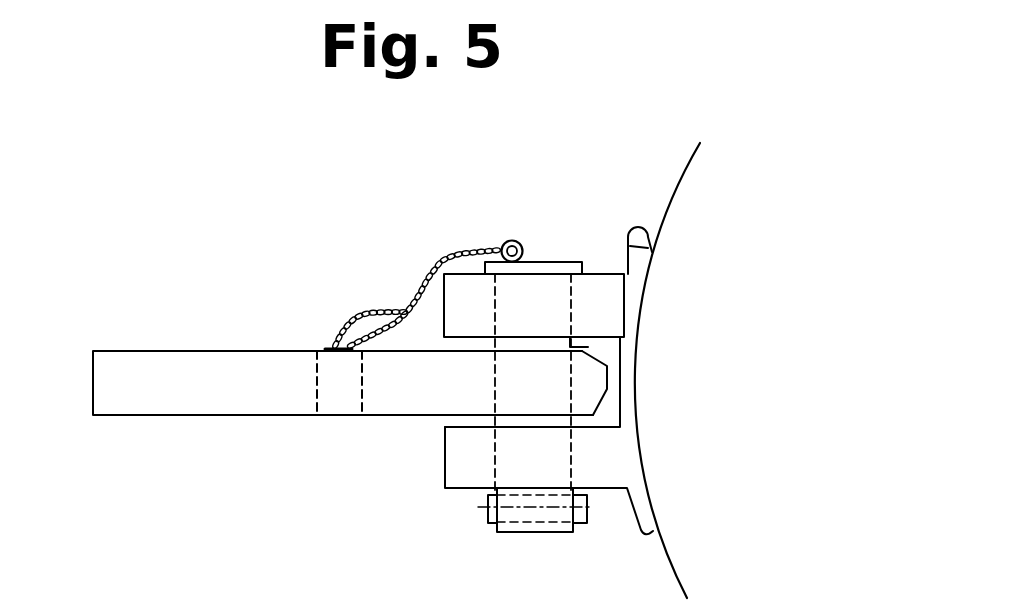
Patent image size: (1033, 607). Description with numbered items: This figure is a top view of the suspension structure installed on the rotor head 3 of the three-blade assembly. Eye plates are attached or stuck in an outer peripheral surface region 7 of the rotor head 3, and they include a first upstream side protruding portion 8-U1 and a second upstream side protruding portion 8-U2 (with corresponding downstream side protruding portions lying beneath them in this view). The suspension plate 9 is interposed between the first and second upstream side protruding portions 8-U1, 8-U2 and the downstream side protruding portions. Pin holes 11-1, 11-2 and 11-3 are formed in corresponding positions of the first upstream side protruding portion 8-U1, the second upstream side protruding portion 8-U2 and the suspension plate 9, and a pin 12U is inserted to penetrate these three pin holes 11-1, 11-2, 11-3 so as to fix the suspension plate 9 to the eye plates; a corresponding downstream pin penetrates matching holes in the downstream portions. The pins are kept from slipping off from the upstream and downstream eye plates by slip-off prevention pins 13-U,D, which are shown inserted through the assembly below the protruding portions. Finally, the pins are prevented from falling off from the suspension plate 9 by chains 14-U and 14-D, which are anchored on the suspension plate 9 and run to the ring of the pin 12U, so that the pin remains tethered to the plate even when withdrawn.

The rotor head 3 is at (720, 257).
The outer peripheral surface region 7 is at (632, 247).
The suspension plate 9 is at (453, 393).
The first upstream side protruding portion 8-U1 is at (443, 318).
The second upstream side protruding portion 8-U2 is at (447, 488).
The pin hole 11-1 is at (572, 308).
The pin hole 11-2 is at (571, 380).
The pin hole 11-3 is at (571, 454).
The pin 12U is at (605, 343).
The slip-off prevention pins 13-U,D is at (580, 532).
The chain 14-U is at (410, 307).
The chain 14-D is at (343, 340).